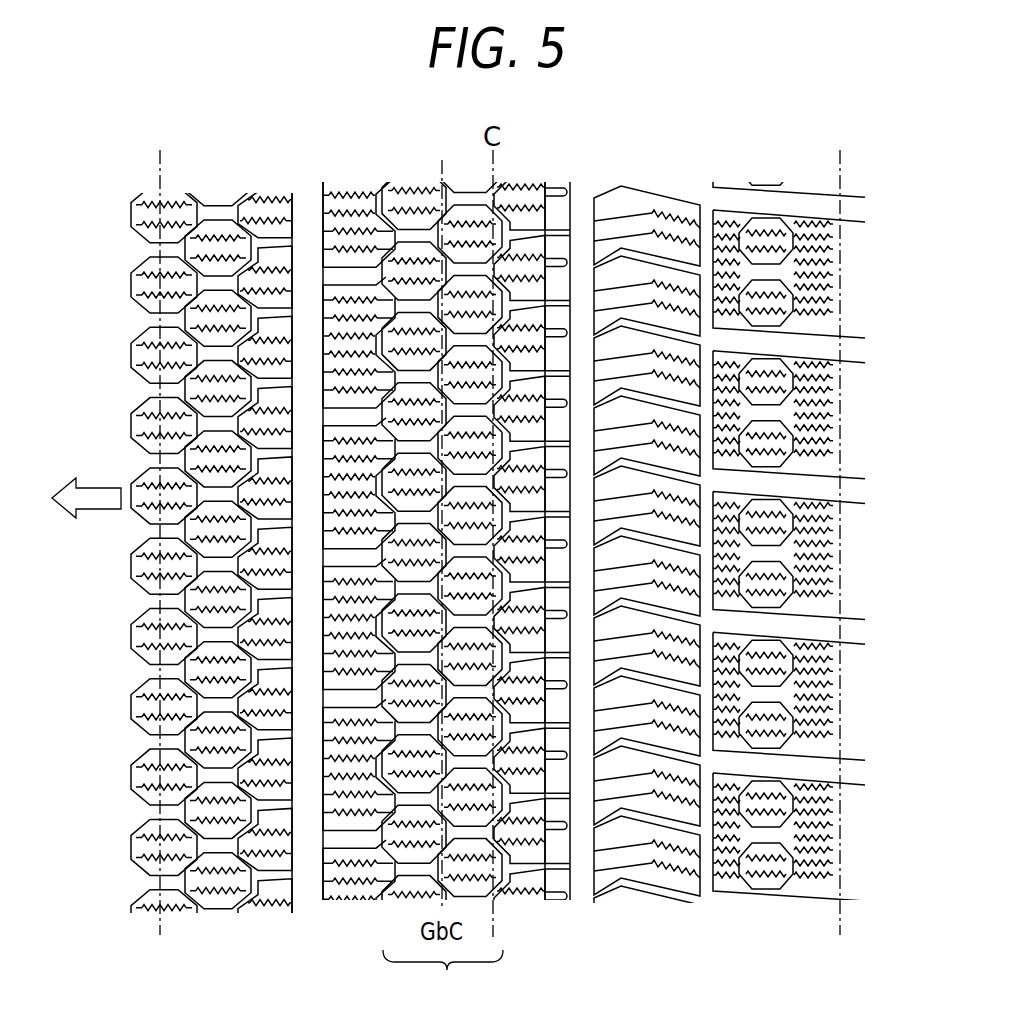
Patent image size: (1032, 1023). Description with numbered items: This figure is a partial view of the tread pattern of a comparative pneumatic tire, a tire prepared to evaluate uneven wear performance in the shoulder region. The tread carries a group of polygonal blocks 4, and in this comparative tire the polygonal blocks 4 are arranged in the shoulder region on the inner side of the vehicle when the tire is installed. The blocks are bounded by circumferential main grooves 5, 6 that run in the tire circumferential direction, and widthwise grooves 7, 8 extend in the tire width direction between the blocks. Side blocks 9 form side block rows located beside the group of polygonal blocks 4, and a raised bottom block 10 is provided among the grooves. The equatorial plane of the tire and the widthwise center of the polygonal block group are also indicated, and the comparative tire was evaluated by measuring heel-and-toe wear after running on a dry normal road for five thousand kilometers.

The polygonal blocks 4 is at (410, 486).
The circumferential main groove 5 is at (578, 216).
The circumferential main groove 6 is at (305, 217).
The widthwise groove 7 is at (545, 443).
The widthwise groove 8 is at (355, 553).
The side blocks 9 is at (355, 770).
The raised bottom block 10 is at (553, 598).